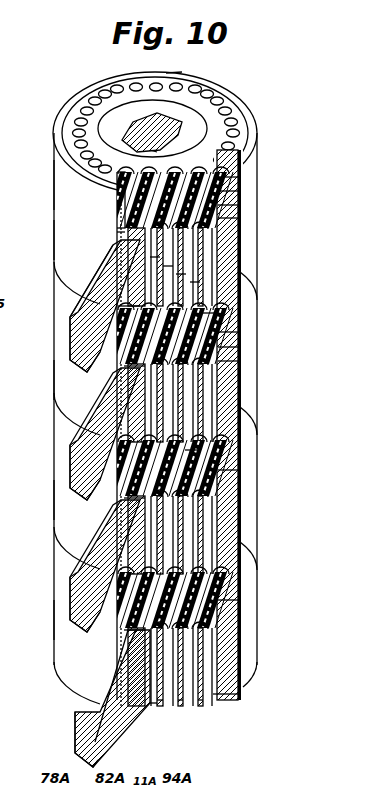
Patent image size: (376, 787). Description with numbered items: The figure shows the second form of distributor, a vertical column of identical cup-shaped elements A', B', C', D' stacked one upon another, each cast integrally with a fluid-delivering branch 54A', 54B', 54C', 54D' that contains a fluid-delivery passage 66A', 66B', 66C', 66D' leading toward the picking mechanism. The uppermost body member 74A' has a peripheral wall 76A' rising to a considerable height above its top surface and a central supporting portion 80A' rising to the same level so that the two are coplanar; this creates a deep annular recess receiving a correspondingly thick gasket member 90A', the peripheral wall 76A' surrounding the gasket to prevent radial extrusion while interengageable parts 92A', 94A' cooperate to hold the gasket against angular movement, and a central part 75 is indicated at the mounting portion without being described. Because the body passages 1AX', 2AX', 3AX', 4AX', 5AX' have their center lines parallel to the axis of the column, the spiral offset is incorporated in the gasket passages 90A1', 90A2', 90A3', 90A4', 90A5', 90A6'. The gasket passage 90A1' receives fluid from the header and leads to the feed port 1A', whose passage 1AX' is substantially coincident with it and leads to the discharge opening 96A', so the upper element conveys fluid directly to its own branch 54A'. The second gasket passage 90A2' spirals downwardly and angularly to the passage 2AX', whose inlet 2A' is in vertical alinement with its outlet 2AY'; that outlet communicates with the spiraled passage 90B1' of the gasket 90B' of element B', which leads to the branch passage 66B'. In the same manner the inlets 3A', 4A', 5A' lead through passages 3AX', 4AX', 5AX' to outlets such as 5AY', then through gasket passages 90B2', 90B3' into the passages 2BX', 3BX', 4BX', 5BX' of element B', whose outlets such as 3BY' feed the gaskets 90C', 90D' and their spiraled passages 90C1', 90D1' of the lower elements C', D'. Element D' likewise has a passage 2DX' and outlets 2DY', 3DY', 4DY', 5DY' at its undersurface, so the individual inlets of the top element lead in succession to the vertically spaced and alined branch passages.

The peripheral wall 76A' is at (146, 133).
The interengageable part (tab/slot) for gasket 94A' is at (198, 66).
The gasket tab 92A' is at (163, 126).
The gasket member 90A' is at (182, 125).
The supporting (mounting) portion 80A' is at (194, 126).
The central disc 75 is at (183, 132).
The first gasket member passage 90A1' is at (152, 146).
The sixth gasket member passage 90A6' is at (273, 136).
The second gasket member passage 90A2' is at (262, 165).
The third gasket member passage 90A3' is at (262, 180).
The fourth gasket member passage 90A4' is at (262, 196).
The fifth gasket member passage 90A5' is at (262, 210).
The top opening (inlet) 5A' is at (266, 199).
The top opening (inlet) 4A' is at (255, 206).
The top opening (inlet) 3A' is at (243, 214).
The top opening (inlet) 2A' is at (230, 220).
The passage 2AX' is at (245, 273).
The passage 3AX' is at (252, 284).
The passage 4AX' is at (258, 295).
The passage 5AX' is at (265, 305).
The outlet 5AY' is at (247, 315).
The second gasket member passage of element B' 90B2' is at (260, 329).
The third gasket member passage of element B' 90B3' is at (260, 343).
The gasket member of element B' 90B' is at (256, 358).
The passage 2BX' is at (211, 341).
The passage 3BX' is at (224, 349).
The passage 4BX' is at (236, 356).
The passage 5BX' is at (247, 362).
The outlet 3BY' is at (242, 440).
The gasket member of element C' 90C' is at (264, 468).
The gasket member of element D' 90D' is at (261, 595).
The outlet 5DY' is at (261, 682).
The outlet 4DY' is at (241, 703).
The outlet 3DY' is at (211, 713).
The passage 2DX' is at (176, 715).
The outlet 2DY' is at (152, 726).
The uppermost distributor element A' is at (32, 185).
The second distributor element B' is at (33, 380).
The third distributor element C' is at (33, 500).
The fourth distributor element D' is at (36, 620).
The feed port (feed opening) 1A' is at (101, 200).
The body member 74A' is at (32, 240).
The feed passage 1AX' is at (92, 236).
The discharge opening 96A' is at (86, 281).
The outlet 2AY' is at (124, 310).
The fluid-delivering branch 54A' is at (75, 306).
The fluid-delivery passage 66A' is at (58, 344).
The first gasket member passage of element B' 90B1' is at (119, 372).
The fluid-delivering branch 54B' is at (77, 434).
The branch passage 66B' is at (59, 472).
The first gasket member passage of element C' 90C1' is at (119, 504).
The fluid-delivering branch 54C' is at (76, 566).
The branch passage 66C' is at (56, 604).
The first gasket member passage of element D' 90D1' is at (119, 633).
The fluid-delivering branch 54D' is at (86, 698).
The branch passage 66D' is at (63, 739).